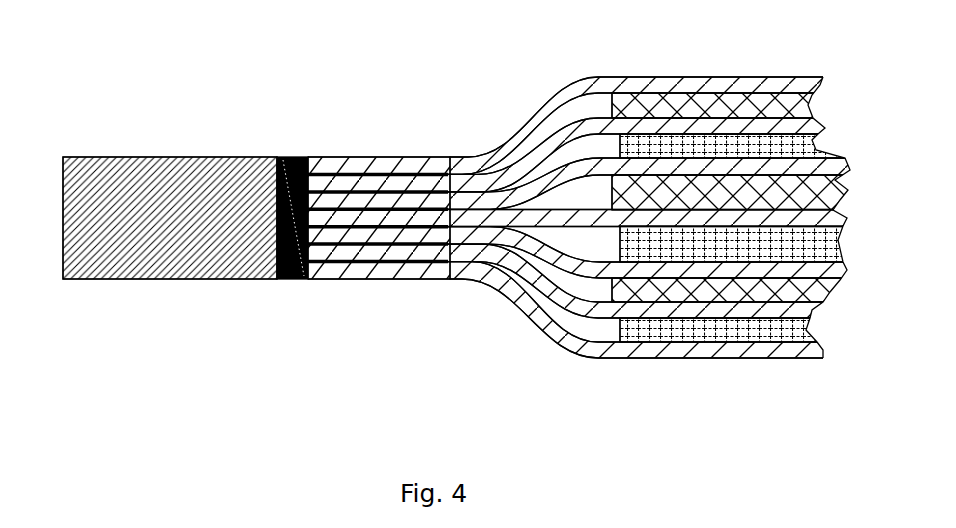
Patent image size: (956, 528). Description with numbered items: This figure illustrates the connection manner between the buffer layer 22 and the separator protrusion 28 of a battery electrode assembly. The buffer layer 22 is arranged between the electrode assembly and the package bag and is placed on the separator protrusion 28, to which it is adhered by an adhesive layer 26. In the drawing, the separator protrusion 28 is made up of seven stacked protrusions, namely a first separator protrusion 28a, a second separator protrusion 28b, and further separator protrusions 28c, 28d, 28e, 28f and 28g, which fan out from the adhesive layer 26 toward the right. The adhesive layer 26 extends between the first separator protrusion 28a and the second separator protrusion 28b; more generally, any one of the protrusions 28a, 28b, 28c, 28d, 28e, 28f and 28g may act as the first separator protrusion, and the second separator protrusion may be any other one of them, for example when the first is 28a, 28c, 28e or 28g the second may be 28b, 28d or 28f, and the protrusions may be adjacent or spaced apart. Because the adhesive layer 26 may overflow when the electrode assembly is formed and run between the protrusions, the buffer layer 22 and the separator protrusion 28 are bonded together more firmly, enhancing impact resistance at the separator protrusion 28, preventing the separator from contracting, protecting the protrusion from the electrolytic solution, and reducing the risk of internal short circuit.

The buffer layer 22 is at (108, 157).
The adhesive layer 26 is at (328, 157).
The separator protrusion 28 is at (352, 92).
The first separator protrusion 28a is at (370, 163).
The second separator protrusion 28b is at (415, 182).
The separator protrusion 28c is at (440, 200).
The separator protrusion 28d is at (357, 217).
The separator protrusion 28e is at (377, 235).
The separator protrusion 28f is at (398, 257).
The separator protrusion 28g is at (418, 272).